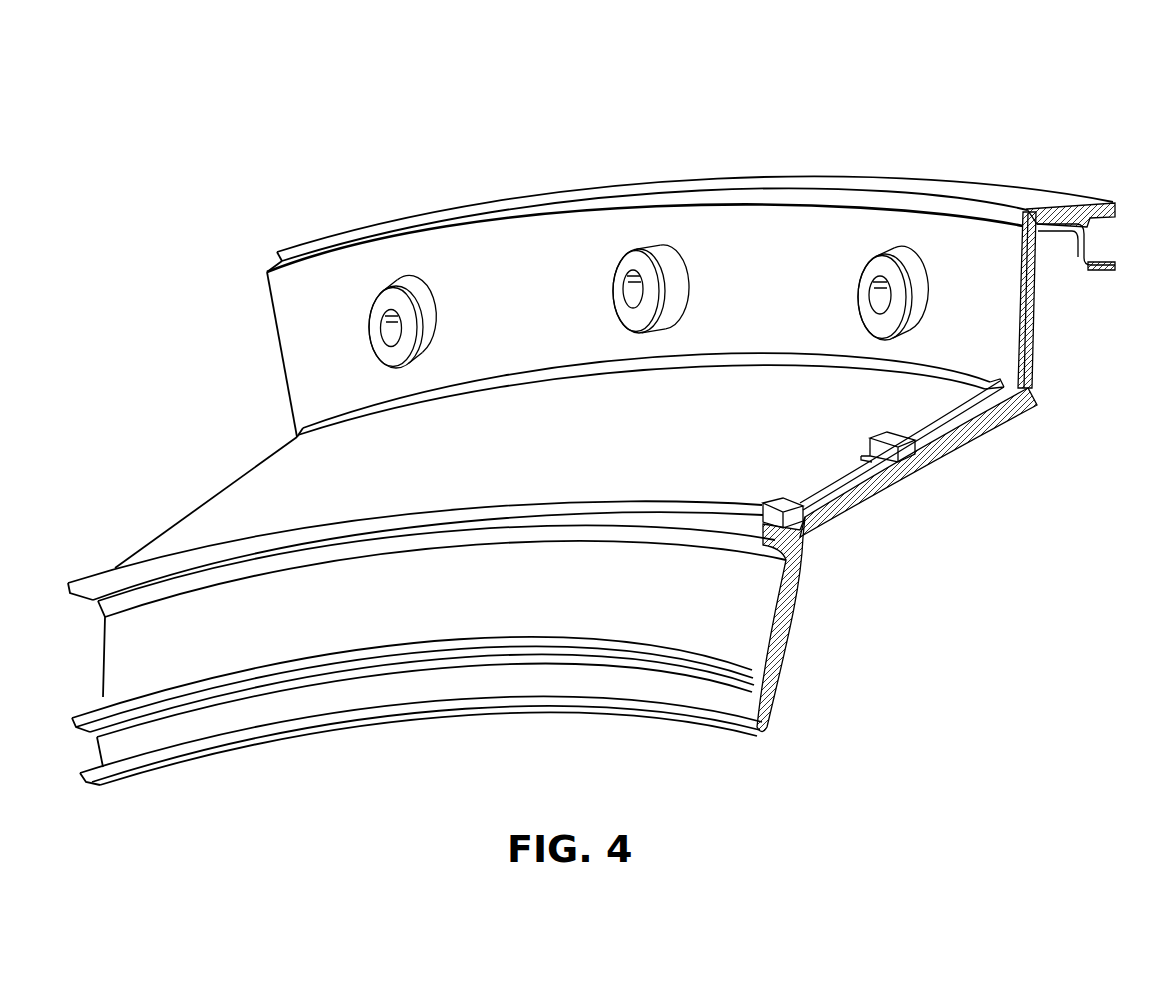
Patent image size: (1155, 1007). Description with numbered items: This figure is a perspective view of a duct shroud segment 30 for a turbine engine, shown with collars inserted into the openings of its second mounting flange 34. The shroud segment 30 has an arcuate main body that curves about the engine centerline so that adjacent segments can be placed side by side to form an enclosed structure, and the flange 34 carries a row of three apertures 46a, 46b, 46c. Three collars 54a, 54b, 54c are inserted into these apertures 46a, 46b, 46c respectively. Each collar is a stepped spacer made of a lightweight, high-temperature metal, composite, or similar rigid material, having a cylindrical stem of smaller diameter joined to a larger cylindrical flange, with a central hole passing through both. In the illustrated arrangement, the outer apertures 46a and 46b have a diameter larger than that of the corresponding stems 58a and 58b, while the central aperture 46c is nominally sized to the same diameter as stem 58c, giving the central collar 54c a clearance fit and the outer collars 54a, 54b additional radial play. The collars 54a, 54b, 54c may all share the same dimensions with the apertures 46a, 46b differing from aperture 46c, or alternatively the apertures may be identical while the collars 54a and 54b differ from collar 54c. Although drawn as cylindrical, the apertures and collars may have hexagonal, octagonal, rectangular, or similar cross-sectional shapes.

The duct shroud segment 30 is at (753, 124).
The main body 34 is at (1036, 318).
The aperture 46a is at (407, 277).
The aperture 46b is at (896, 247).
The central aperture 46c is at (662, 247).
The collar 54a is at (378, 330).
The collar 54b is at (867, 292).
The collar 54c is at (620, 291).
The stem 58a is at (388, 303).
The stem 58b is at (882, 266).
The stem 58c is at (637, 264).